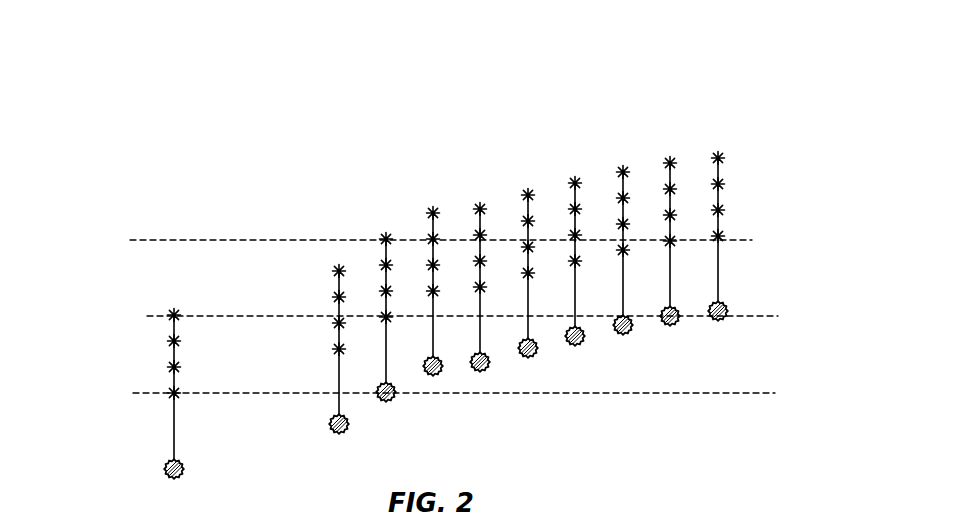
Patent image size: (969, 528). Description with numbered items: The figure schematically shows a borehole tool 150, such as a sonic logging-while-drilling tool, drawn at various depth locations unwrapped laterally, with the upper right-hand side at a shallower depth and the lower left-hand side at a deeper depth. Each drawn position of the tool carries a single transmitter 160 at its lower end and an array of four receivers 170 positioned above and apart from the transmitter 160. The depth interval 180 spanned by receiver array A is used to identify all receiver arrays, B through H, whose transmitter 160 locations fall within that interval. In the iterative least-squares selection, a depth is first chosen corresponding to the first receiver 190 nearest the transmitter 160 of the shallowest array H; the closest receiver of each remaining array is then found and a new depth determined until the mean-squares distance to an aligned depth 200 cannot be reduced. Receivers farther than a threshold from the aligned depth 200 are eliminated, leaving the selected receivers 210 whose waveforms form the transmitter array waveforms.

The borehole tool 150 is at (166, 394).
The transmitter 160 is at (183, 471).
The receivers 170 is at (169, 392).
The depth interval 180 is at (755, 320).
The first receiver 190 is at (688, 248).
The aligned depth 200 is at (756, 241).
The receivers 210 is at (621, 247).